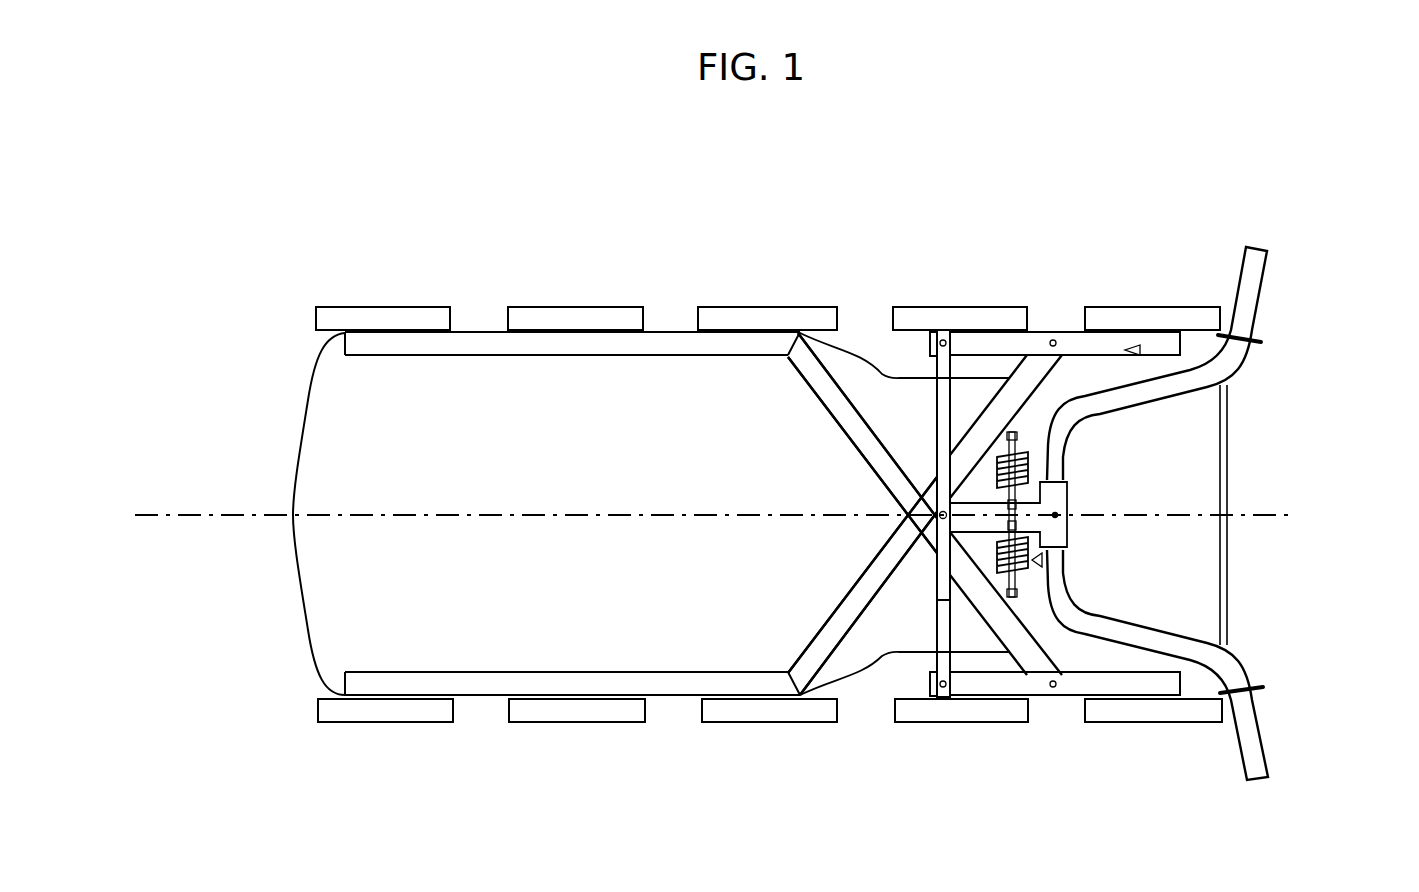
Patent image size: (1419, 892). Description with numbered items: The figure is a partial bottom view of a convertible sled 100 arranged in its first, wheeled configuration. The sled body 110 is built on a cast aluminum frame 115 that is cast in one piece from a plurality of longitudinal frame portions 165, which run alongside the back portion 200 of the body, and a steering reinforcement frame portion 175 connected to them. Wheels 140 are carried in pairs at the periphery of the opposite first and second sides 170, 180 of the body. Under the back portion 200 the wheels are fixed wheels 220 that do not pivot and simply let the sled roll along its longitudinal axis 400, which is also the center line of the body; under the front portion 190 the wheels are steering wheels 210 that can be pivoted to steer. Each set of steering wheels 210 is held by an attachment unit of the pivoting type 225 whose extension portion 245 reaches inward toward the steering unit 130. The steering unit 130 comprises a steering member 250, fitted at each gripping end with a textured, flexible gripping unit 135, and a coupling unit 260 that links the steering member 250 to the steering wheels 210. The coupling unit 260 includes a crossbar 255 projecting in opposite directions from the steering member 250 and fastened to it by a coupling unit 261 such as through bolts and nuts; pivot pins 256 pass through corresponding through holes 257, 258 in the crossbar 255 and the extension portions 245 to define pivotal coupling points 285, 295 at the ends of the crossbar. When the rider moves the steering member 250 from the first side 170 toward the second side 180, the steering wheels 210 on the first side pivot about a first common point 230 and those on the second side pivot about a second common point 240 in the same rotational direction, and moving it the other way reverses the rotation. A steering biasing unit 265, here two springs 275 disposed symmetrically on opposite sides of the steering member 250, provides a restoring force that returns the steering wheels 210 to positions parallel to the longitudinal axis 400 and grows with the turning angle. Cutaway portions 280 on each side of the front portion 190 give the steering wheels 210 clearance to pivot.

The convertible sled 100 is at (1264, 184).
The sled body 110 is at (300, 432).
The cast aluminum frame 115 is at (674, 502).
The steering unit 130 is at (1220, 433).
The gripping unit 135 is at (1262, 285).
The wheels 140 is at (965, 813).
The longitudinal frame portions 165 is at (663, 670).
The first side 170 is at (662, 697).
The steering reinforcement frame portion 175 is at (883, 479).
The second side 180 is at (663, 333).
The front portion 190 is at (1118, 506).
The back portion 200 is at (485, 486).
The steering wheels 210 is at (948, 310).
The fixed wheels 220 is at (365, 313).
The attachment units of a pivoting type 225 is at (1140, 352).
The first common point 230 is at (1032, 690).
The second common point 240 is at (1053, 340).
The extension portion 245 is at (1040, 333).
The steering member 250 is at (1180, 632).
The crossbar 255 is at (937, 407).
The pivot pins 256 is at (868, 385).
The through hole 257 is at (870, 722).
The through hole 258 is at (933, 514).
The coupling unit 260 is at (847, 514).
The coupling unit 261 is at (935, 516).
The steering biasing unit 265 is at (1042, 560).
The springs 275 is at (1028, 463).
The cutaway portion 280 is at (852, 400).
The pivotal coupling point 285 is at (955, 723).
The pivotal coupling point 295 is at (943, 330).
The longitudinal axis 400 is at (225, 515).